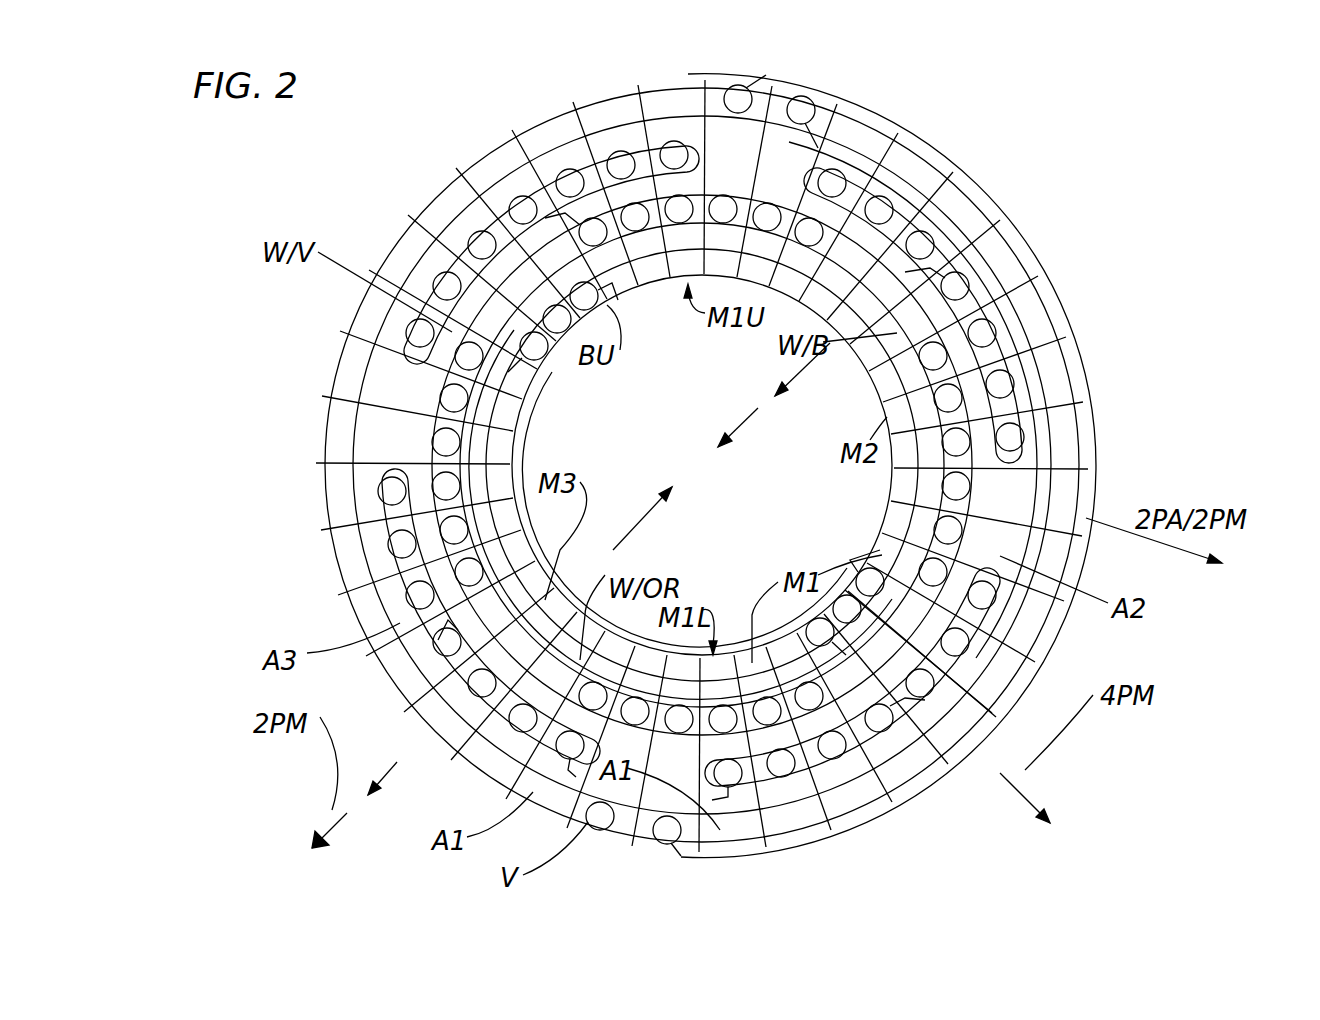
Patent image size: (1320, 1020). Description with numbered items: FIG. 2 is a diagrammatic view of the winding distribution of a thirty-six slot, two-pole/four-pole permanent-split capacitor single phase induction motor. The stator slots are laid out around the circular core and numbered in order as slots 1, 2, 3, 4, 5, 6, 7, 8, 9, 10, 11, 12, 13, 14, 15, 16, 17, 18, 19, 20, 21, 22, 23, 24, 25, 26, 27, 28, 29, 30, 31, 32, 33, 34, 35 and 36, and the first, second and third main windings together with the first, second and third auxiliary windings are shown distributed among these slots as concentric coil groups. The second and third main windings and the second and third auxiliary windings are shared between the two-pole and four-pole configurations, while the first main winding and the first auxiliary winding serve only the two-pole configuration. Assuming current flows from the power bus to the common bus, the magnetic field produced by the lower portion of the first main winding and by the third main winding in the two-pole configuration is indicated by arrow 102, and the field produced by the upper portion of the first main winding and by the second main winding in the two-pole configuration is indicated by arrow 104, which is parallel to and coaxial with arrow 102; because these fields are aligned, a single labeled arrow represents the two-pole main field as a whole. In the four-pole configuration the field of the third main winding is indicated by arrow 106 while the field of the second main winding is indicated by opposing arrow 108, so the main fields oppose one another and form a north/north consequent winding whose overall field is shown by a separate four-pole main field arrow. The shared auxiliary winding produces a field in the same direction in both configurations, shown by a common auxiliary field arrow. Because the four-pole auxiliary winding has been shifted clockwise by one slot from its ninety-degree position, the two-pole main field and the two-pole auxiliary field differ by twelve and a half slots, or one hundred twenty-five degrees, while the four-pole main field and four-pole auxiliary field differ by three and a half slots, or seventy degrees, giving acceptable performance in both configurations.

The stator slot 1 is at (779, 171).
The stator slot 2 is at (828, 188).
The stator slot 3 is at (873, 213).
The stator slot 4 is at (913, 246).
The stator slot 5 is at (947, 282).
The stator slot 6 is at (973, 323).
The stator slot 7 is at (992, 369).
The stator slot 8 is at (1001, 427).
The stator slot 9 is at (1002, 495).
The stator slot 10 is at (998, 546).
The stator slot 11 is at (981, 595).
The stator slot 12 is at (955, 640).
The coil end connection / stator slot 13 is at (753, 526).
The winding coil conductor turns / stator slot 14 is at (701, 478).
The winding lead connection / stator slot 15 is at (739, 467).
The stator slot 16 is at (798, 759).
The stator slot 17 is at (740, 769).
The stator slot 18 is at (672, 770).
The coil end connection / stator slot 19 is at (702, 586).
The winding coil conductor turns / stator slot 20 is at (714, 519).
The stator slot 21 is at (527, 719).
The stator slot 22 is at (486, 686).
The stator slot 23 is at (453, 650).
The stator slot 24 is at (426, 608).
The stator slot 25 is at (408, 562).
The stator slot 26 is at (398, 505).
The stator slot 27 is at (397, 437).
The stator slot 28 is at (406, 386).
The stator slot 29 is at (423, 337).
The stator slot 30 is at (448, 292).
The stator slot 31 is at (481, 251).
The stator slot 32 is at (518, 218).
The stator slot 33 is at (559, 191).
The stator slot 34 is at (605, 173).
The stator slot 35 is at (664, 163).
The stator slot 36 is at (732, 162).
The arrow 102 is at (425, 790).
The arrow 104 is at (797, 375).
The arrow 106 is at (645, 507).
The opposing arrow 108 is at (743, 427).